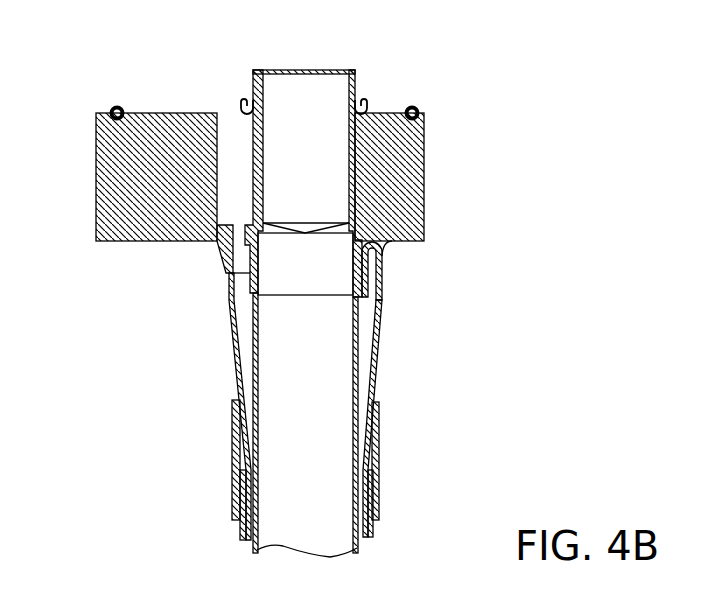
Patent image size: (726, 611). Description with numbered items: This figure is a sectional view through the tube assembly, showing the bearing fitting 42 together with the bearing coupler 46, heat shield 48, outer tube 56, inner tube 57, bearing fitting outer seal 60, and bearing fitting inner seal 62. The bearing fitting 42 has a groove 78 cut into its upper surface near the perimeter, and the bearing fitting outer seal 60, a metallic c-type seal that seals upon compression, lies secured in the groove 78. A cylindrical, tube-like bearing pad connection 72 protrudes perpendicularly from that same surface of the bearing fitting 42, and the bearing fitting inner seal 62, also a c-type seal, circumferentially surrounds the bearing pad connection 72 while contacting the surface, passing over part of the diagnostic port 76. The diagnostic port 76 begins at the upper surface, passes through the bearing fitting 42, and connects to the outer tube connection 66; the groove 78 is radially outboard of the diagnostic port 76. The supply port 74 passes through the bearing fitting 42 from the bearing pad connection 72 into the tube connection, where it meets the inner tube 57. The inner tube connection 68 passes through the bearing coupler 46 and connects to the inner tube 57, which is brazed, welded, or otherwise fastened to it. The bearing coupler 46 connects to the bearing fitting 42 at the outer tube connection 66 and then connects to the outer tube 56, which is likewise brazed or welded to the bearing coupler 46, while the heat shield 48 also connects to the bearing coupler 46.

The bearing fitting 42 is at (132, 57).
The bearing coupler 46 is at (372, 318).
The heat shield 48 is at (380, 487).
The outer tube 56 is at (372, 530).
The inner tube 57 is at (328, 543).
The bearing fitting outer seal 60 is at (110, 110).
The bearing fitting inner seal 62 is at (243, 96).
The outer tube connection 66 is at (385, 253).
The inner tube connection 68 is at (340, 279).
The bearing pad connection 72 is at (267, 72).
The supply port 74 is at (305, 97).
The diagnostic port 76 is at (228, 205).
The groove 78 is at (108, 121).